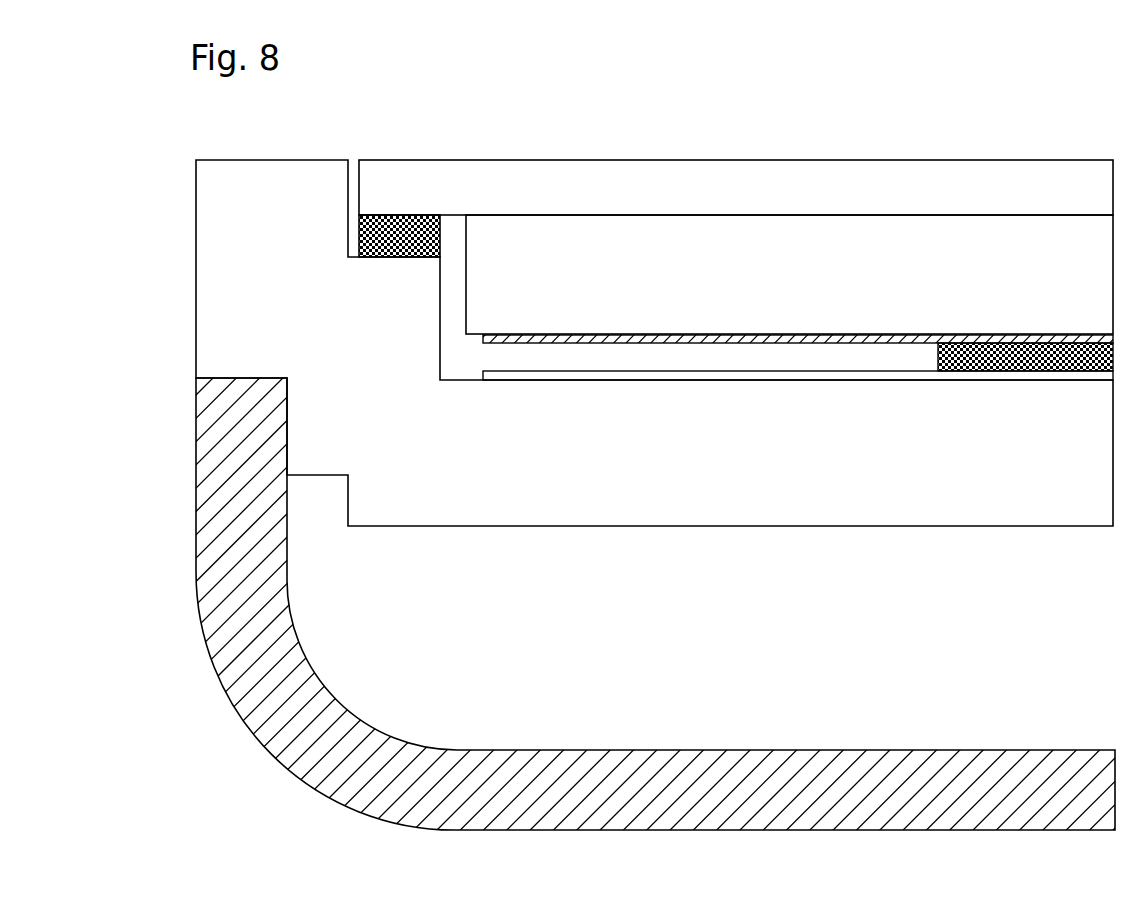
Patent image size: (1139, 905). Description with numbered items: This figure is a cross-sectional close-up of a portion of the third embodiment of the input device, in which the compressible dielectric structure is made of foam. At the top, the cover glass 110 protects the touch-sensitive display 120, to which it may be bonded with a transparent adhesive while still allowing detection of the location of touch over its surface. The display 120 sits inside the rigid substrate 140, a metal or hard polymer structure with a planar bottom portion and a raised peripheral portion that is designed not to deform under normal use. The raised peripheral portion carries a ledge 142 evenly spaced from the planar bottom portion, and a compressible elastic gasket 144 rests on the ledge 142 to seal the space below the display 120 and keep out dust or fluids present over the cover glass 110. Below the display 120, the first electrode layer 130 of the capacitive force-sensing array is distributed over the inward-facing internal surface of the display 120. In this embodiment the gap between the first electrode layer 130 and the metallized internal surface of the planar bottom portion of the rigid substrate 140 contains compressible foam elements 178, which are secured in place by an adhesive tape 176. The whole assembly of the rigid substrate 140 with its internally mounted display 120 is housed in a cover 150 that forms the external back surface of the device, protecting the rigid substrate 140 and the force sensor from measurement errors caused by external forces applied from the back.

The cover glass 110 is at (713, 190).
The touch-sensitive display 120 is at (866, 285).
The first electrode layer 130 is at (565, 343).
The rigid substrate 140 is at (410, 483).
The ledge 142 is at (412, 258).
The compressible elastic gasket 144 is at (396, 215).
The cover 150 is at (905, 767).
The adhesive tape 176 is at (1008, 375).
The compressible foam elements 178 is at (950, 372).